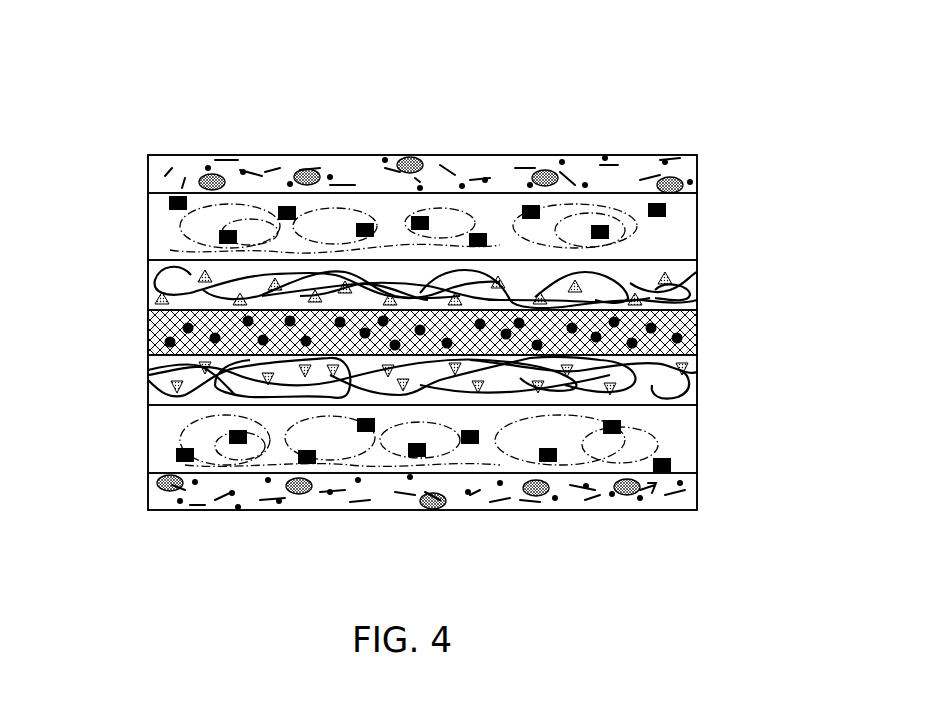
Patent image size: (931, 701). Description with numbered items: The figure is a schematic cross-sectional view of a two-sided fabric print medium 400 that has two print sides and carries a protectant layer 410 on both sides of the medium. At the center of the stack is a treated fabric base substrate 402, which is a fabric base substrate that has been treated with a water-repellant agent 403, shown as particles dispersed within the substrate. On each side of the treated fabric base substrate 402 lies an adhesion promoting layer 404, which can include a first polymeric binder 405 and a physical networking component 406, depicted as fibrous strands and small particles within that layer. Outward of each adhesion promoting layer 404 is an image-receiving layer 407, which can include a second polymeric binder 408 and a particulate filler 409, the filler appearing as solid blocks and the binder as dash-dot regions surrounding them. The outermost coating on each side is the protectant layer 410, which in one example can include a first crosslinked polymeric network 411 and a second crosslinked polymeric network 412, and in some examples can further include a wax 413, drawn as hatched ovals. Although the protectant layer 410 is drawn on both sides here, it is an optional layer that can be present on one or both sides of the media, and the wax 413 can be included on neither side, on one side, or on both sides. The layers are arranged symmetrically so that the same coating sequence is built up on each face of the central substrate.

The fabric print medium 400 is at (155, 45).
The treated fabric base substrate 402 is at (716, 337).
The water-repellant agent 403 is at (163, 340).
The adhesion promoting layer 404 is at (130, 288).
The first polymeric binder 405 is at (693, 300).
The physical networking component 406 is at (668, 272).
The image-receiving layer 407 is at (716, 227).
The second polymeric binder 408 is at (175, 236).
The particulate filler 409 is at (170, 205).
The protectant layer 410 is at (130, 172).
The first crosslinked polymeric network 411 is at (266, 172).
The second crosslinked polymeric network 412 is at (563, 160).
The wax 413 is at (412, 158).